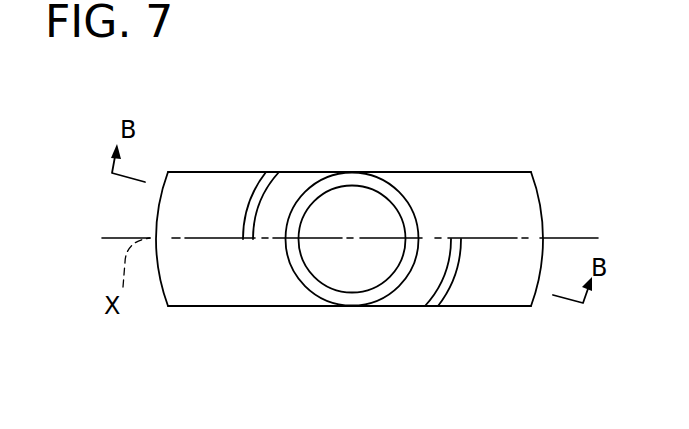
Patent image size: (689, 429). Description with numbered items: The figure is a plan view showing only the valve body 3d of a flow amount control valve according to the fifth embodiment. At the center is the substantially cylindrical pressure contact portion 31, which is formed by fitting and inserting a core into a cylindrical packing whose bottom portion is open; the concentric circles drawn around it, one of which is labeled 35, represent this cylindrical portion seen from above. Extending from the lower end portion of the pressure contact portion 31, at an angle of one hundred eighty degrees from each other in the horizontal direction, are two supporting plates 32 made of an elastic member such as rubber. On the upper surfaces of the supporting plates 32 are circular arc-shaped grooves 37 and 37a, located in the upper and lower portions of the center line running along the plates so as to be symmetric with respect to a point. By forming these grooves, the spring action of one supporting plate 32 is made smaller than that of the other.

The valve body 3d is at (465, 173).
The pressure contact portion 31 is at (341, 187).
The supporting plate 32 is at (520, 208).
The annular boss 35 is at (370, 205).
The circular arc-shaped groove 37 is at (258, 192).
The circular arc-shaped groove 37a is at (450, 268).